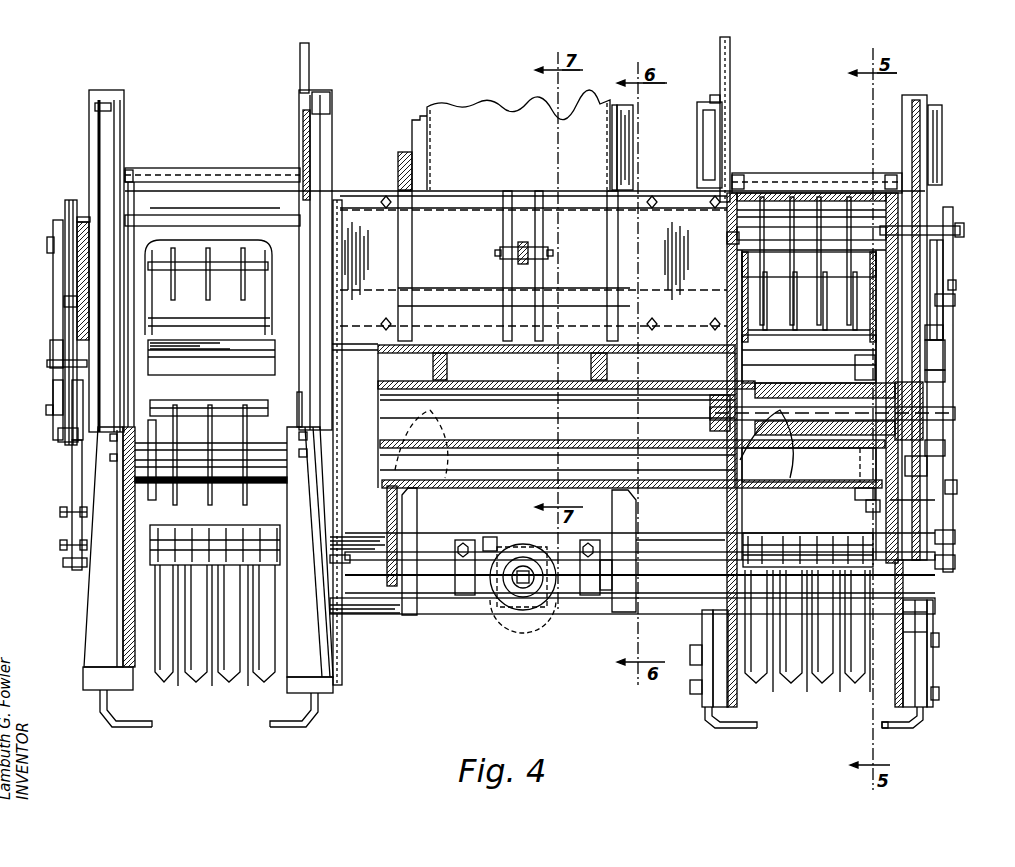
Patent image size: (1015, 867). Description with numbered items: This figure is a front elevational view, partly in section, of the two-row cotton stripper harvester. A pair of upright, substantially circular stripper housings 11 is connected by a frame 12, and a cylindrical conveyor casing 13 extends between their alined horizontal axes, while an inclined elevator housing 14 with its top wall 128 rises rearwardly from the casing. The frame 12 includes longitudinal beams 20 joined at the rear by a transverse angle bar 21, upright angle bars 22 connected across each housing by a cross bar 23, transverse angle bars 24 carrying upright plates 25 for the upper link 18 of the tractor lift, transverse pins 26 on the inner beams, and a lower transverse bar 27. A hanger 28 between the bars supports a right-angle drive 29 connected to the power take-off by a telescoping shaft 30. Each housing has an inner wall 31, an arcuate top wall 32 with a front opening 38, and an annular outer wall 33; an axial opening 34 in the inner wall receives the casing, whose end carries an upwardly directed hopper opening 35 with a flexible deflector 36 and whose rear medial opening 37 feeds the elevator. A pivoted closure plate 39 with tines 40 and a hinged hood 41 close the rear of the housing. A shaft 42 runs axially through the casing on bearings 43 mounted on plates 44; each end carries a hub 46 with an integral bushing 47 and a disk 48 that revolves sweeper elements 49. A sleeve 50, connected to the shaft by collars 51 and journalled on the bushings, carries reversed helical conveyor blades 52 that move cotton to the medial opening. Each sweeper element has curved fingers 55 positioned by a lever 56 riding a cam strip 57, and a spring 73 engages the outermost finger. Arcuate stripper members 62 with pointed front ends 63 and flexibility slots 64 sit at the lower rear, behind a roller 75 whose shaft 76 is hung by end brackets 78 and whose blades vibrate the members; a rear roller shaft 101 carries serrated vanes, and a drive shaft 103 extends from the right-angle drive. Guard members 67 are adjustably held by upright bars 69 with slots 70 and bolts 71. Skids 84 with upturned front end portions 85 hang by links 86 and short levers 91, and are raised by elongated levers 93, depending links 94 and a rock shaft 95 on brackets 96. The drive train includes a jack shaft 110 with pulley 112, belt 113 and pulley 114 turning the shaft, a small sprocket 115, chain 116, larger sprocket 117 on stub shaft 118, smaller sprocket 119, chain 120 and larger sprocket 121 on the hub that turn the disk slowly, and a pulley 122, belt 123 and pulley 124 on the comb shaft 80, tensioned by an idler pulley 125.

The stripper housing 11 is at (212, 190).
The frame 12 is at (382, 612).
The conveyor casing 13 is at (478, 490).
The elevator housing 14 is at (478, 106).
The upper link 18 is at (515, 248).
The longitudinal beam 20 is at (702, 610).
The rear transverse angle bar 21 is at (603, 530).
The upright angle bar 22 is at (125, 112).
The cross bar 23 is at (138, 168).
The transverse angle bar 24 is at (480, 192).
The upright plate 25 is at (505, 288).
The transverse pin 26 is at (355, 555).
The lower transverse angle bar 27 is at (610, 612).
The hanger 28 is at (572, 612).
The right-angle drive 29 is at (515, 545).
The telescoping shaft 30 is at (505, 612).
The inner wall 31 is at (727, 325).
The top wall 32 is at (162, 182).
The outer annular wall 33 is at (930, 690).
The axial opening 34 is at (740, 347).
The hopper opening 35 is at (802, 380).
The flexible deflector 36 is at (243, 360).
The medial opening 37 is at (528, 345).
The front opening 38 is at (272, 288).
The closure plate 39 is at (875, 330).
The tines 40 is at (195, 310).
The hood 41 is at (727, 226).
The shaft 42 is at (47, 411).
The bearing 43 is at (925, 398).
The plate 44 is at (925, 450).
The hub 46 is at (920, 472).
The bushing 47 is at (845, 450).
The disk 48 is at (890, 516).
The sweeper element 49 is at (262, 247).
The cylindrical sleeve 50 is at (515, 440).
The internal collar 51 is at (762, 480).
The helical conveyor blade 52 is at (468, 345).
The finger 55 is at (162, 258).
The lever 56 is at (866, 512).
The cam strip 57 is at (855, 497).
The stripper member 62 is at (170, 683).
The pointed front end 63 is at (236, 683).
The slot 64 is at (785, 533).
The guard member 67 is at (90, 600).
The upright bar 69 is at (322, 390).
The longitudinal slot 70 is at (322, 410).
The bolts and nuts 71 is at (113, 462).
The spring 73 is at (905, 632).
The roller 75 is at (200, 525).
The roller shaft 76 is at (958, 540).
The end bracket 78 is at (232, 240).
The comb element shaft 80 is at (845, 232).
The skid 84 is at (280, 722).
The skid front end portion 85 is at (932, 714).
The link 86 is at (937, 662).
The short lever 91 is at (965, 224).
The elongated lever 93 is at (333, 126).
The depending link 94 is at (330, 158).
The rock shaft 95 is at (256, 170).
The bracket 96 is at (730, 57).
The roller shaft 101 is at (907, 612).
The drive shaft 103 is at (657, 545).
The jack shaft 110 is at (48, 243).
The pulley 112 is at (52, 224).
The endless belt 113 is at (53, 312).
The pulley 114 is at (53, 426).
The small sprocket 115 is at (60, 262).
The endless chain 116 is at (77, 270).
The larger sprocket 117 is at (53, 326).
The stub shaft 118 is at (63, 300).
The smaller sprocket 119 is at (945, 285).
The chain 120 is at (945, 352).
The larger sprocket 121 is at (945, 366).
The pulley 122 is at (60, 556).
The endless belt 123 is at (72, 460).
The pulley 124 is at (65, 205).
The idler pulley 125 is at (62, 500).
The top wall 128 is at (545, 97).